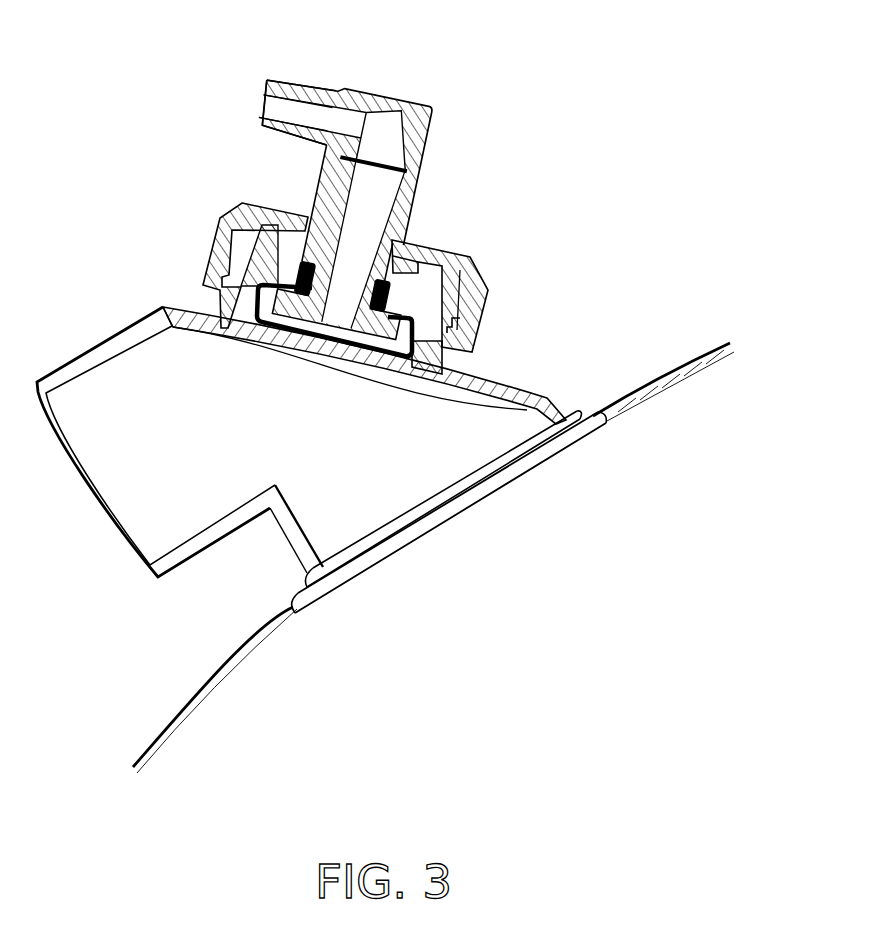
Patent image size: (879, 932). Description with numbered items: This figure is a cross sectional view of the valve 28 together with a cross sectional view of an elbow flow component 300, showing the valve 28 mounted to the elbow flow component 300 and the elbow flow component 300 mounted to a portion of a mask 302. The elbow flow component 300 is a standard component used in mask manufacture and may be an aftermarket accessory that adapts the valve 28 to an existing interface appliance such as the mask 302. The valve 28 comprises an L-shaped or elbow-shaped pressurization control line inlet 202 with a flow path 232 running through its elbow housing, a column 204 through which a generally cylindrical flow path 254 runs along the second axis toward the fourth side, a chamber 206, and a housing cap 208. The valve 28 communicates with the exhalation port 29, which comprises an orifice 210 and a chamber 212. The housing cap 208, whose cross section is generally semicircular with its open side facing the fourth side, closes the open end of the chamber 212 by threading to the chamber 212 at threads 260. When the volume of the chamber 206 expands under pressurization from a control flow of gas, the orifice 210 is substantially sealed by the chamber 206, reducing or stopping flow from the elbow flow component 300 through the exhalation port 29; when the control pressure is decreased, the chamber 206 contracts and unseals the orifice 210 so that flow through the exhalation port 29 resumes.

The valve 28 is at (310, 228).
The pressurization control line inlet 202 is at (432, 118).
The flow path 232 is at (272, 102).
The column 204 is at (390, 213).
The flow path 254 is at (372, 184).
The chamber 212 is at (272, 249).
The housing cap 208 is at (477, 268).
The chamber 206 is at (441, 361).
The threads 260 is at (458, 318).
The orifice 210 is at (316, 352).
The exhalation port 29 is at (343, 362).
The elbow flow component 300 is at (151, 577).
The mask 302 is at (245, 720).